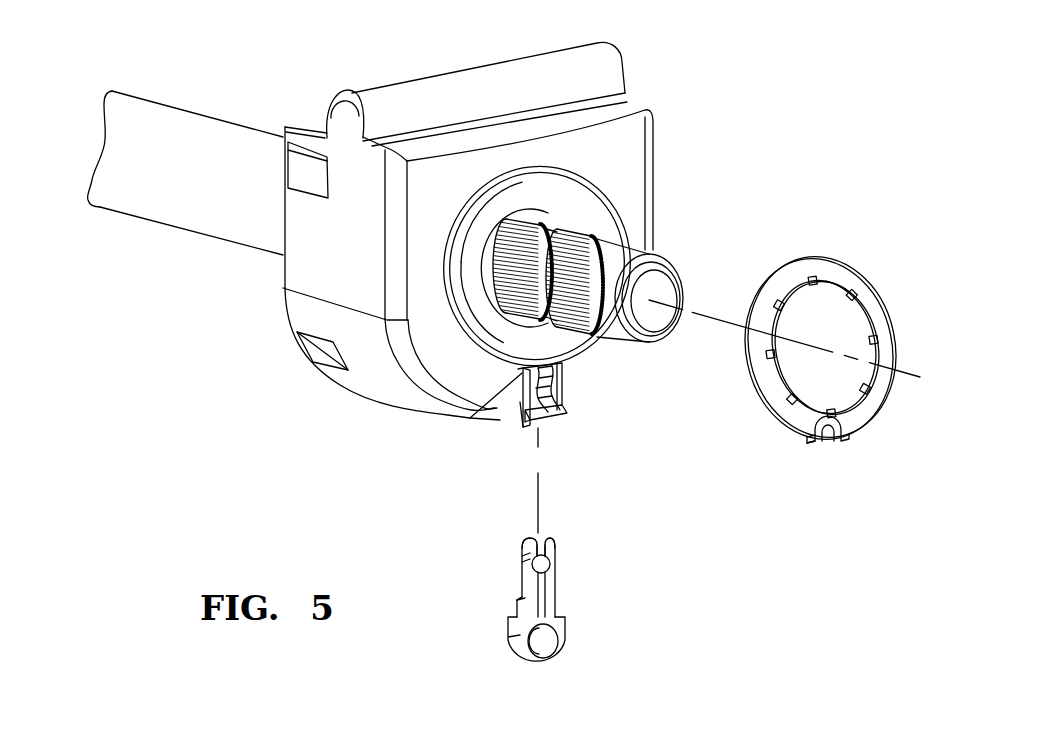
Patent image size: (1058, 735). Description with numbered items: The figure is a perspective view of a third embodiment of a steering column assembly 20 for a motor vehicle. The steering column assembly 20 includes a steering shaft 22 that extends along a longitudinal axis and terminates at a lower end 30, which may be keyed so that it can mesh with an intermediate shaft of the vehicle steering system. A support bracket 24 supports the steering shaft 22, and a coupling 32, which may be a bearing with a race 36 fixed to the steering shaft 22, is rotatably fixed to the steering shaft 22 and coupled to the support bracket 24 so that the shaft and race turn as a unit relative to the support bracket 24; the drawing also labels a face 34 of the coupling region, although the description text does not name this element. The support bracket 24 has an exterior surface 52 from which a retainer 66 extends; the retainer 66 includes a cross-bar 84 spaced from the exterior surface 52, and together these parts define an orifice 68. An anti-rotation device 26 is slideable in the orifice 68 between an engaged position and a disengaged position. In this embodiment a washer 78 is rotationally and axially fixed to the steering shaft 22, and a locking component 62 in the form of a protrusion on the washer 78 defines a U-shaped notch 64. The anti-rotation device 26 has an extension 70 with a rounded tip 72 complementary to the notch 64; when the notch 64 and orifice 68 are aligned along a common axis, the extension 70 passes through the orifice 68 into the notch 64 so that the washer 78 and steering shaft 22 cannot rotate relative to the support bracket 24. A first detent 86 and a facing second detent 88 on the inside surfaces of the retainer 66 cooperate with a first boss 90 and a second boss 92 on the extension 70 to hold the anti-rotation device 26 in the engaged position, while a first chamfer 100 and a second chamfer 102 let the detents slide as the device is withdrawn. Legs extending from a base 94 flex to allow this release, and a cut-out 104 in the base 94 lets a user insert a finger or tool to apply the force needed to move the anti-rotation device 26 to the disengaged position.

The steering column assembly 20 is at (280, 439).
The steering shaft 22 is at (233, 128).
The support bracket 24 is at (640, 149).
The anti-rotation device 26 is at (518, 660).
The lower end 30 is at (664, 268).
The coupling 32 is at (590, 210).
The front face 34 is at (553, 190).
The race 36 is at (495, 354).
The exterior surface 52 is at (431, 185).
The locking component 62 is at (843, 430).
The notch 64 is at (827, 440).
The retainer 66 is at (527, 400).
The orifice 68 is at (562, 400).
The extension 70 is at (550, 538).
The tip 72 is at (530, 538).
The washer 78 is at (863, 280).
The cross-bar 84 is at (553, 417).
The first detent 86 is at (521, 392).
The second detent 88 is at (562, 388).
The first boss 90 is at (530, 565).
The second boss 92 is at (552, 560).
The base 94 is at (560, 615).
The first chamfer 100 is at (470, 418).
The second chamfer 102 is at (530, 368).
The cut-out 104 is at (552, 650).